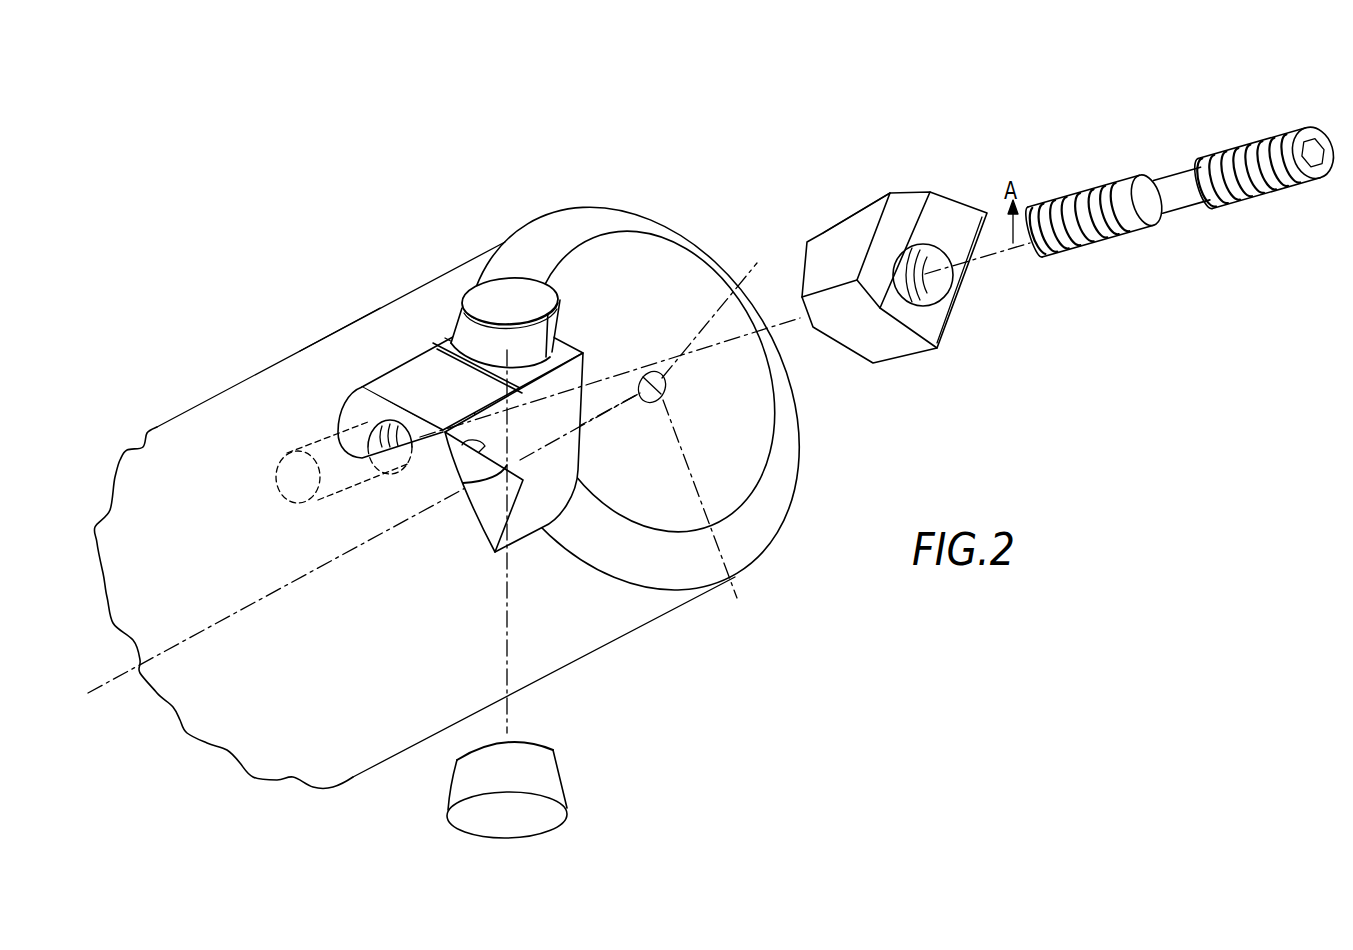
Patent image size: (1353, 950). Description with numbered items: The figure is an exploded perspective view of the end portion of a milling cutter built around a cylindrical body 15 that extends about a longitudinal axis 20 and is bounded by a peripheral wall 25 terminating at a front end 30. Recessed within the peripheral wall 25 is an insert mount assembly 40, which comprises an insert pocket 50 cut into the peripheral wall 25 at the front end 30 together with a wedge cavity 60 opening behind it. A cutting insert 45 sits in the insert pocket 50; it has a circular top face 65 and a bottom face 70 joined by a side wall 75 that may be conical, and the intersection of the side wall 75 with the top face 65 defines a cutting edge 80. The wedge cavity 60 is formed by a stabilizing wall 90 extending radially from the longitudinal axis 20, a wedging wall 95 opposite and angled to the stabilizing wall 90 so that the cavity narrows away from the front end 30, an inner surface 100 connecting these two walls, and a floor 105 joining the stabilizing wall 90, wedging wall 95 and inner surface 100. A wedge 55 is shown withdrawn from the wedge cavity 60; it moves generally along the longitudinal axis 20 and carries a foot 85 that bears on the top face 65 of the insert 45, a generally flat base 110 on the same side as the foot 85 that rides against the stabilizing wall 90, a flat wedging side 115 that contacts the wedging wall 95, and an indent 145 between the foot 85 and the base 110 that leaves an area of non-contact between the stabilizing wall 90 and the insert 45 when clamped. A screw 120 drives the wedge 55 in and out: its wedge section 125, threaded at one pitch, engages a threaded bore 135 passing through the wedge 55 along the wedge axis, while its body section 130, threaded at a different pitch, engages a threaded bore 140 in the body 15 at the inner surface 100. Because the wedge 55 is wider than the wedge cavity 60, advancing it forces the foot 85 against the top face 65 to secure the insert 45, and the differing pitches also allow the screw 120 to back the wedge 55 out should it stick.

The cylindrical body 15 is at (255, 374).
The longitudinal axis 20 is at (280, 590).
The peripheral wall 25 is at (345, 342).
The front end 30 is at (662, 256).
The insert mount assembly 40 is at (460, 415).
The cutting insert 45 is at (548, 789).
The insert pocket 50 is at (505, 296).
The wedge 55 is at (896, 265).
The wedge cavity 60 is at (412, 372).
The top face 65 is at (527, 827).
The bottom face 70 is at (528, 745).
The side wall 75 is at (568, 788).
The cutting edge 80 is at (567, 827).
The foot 85 is at (947, 192).
The stabilizing wall 90 is at (450, 372).
The wedging wall 95 is at (462, 438).
The inner surface 100 is at (360, 405).
The floor 105 is at (557, 473).
The base 110 is at (823, 238).
The wedging side 115 is at (875, 340).
The screw 120 is at (1180, 153).
The wedge section 125 is at (1264, 166).
The body section 130 is at (1094, 214).
The threaded bore 135 is at (948, 265).
The threaded bore 140 is at (388, 418).
The indent 145 is at (847, 213).